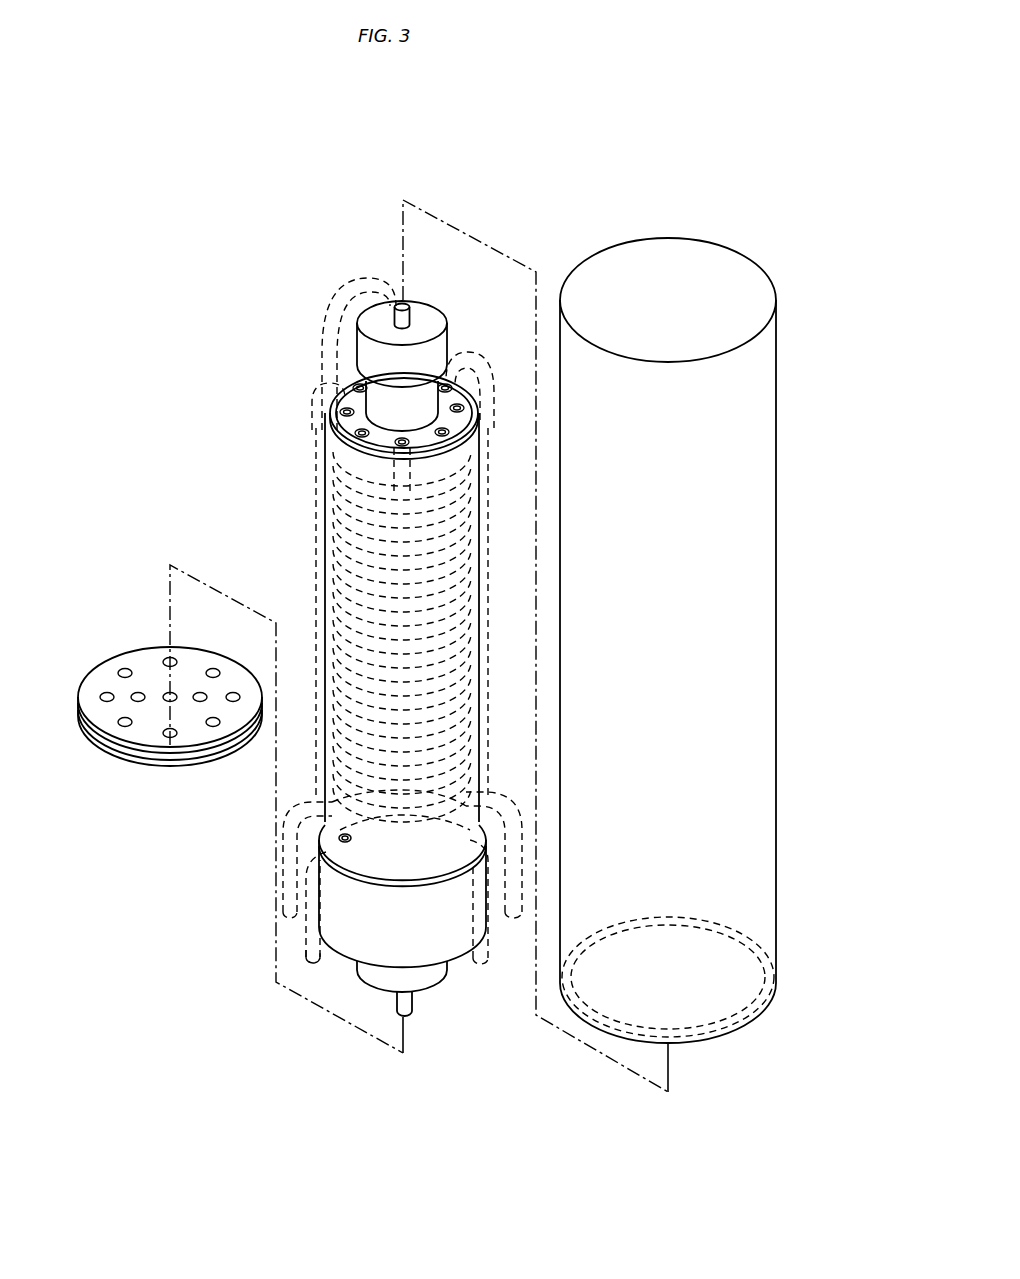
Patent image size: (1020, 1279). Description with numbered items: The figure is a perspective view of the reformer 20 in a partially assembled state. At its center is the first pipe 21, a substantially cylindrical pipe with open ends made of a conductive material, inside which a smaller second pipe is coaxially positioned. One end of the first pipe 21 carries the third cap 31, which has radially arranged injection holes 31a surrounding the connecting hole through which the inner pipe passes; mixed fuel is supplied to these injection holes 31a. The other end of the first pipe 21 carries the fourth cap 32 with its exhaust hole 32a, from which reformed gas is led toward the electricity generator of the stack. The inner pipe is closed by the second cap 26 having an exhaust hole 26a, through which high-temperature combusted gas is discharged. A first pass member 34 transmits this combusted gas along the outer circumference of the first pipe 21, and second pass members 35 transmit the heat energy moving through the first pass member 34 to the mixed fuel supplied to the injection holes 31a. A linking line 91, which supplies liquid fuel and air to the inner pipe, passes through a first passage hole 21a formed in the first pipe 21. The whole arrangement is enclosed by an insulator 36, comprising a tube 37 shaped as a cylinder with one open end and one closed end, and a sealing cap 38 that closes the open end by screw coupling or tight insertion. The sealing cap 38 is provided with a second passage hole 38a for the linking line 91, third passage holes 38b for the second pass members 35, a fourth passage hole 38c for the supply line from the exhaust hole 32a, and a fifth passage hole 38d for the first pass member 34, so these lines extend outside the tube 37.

The reformer 20 is at (779, 208).
The first pipe 21 is at (479, 645).
The first passage hole 21a is at (339, 837).
The second cap 26 is at (447, 347).
The exhaust hole 26a is at (410, 318).
The third cap 31 is at (403, 442).
The injection holes 31a is at (447, 438).
The fourth cap 32 is at (427, 943).
The exhaust hole 32a is at (410, 1008).
The first pass member 34 is at (322, 322).
The second pass members 35 is at (316, 562).
The insulator 36 is at (704, 640).
The tube 37 is at (776, 640).
The sealing cap 38 is at (167, 696).
The second passage hole 38a is at (138, 702).
The third passage holes 38b is at (107, 702).
The fourth passage hole 38c is at (170, 702).
The fifth passage hole 38d is at (200, 702).
The linking line 91 is at (306, 934).